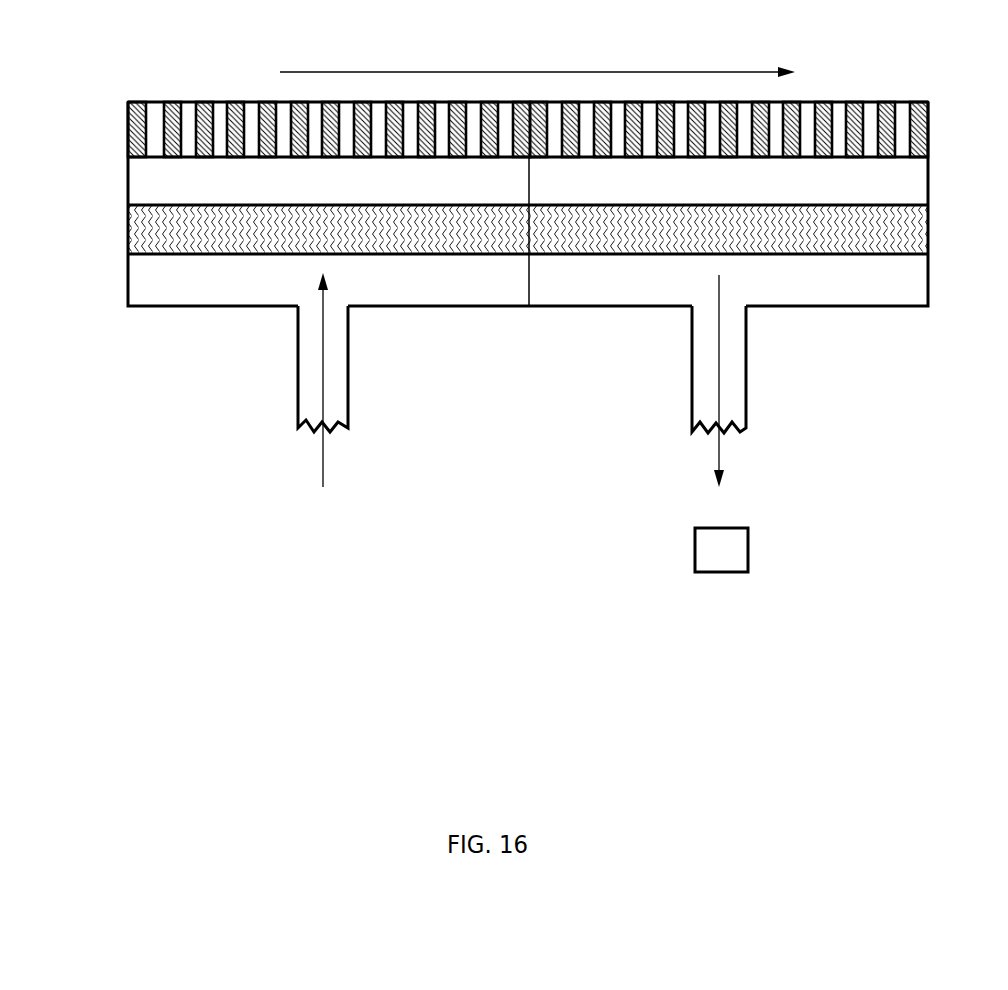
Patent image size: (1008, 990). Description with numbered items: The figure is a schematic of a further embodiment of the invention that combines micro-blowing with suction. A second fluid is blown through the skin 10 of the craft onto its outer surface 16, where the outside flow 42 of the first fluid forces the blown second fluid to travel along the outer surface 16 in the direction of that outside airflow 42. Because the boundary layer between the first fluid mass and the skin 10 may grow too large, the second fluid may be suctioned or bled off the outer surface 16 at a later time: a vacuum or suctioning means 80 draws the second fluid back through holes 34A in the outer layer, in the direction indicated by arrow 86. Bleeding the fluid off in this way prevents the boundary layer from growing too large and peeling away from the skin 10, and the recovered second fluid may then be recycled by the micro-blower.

The skin 10 is at (128, 127).
The outer surface 16 is at (533, 93).
The holes 34A is at (840, 109).
The outside flow 42 is at (597, 72).
The arrow 86 is at (718, 405).
The vacuum or suctioning means 80 is at (748, 550).